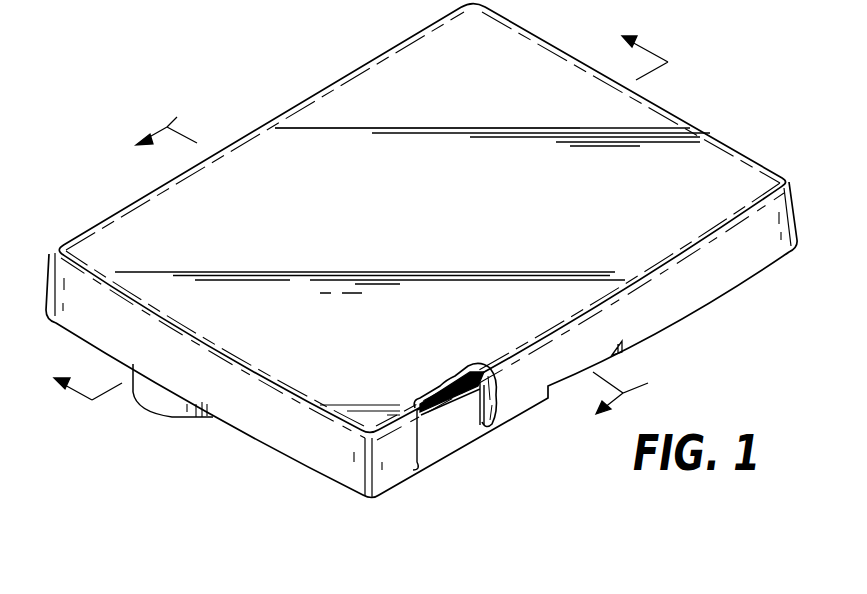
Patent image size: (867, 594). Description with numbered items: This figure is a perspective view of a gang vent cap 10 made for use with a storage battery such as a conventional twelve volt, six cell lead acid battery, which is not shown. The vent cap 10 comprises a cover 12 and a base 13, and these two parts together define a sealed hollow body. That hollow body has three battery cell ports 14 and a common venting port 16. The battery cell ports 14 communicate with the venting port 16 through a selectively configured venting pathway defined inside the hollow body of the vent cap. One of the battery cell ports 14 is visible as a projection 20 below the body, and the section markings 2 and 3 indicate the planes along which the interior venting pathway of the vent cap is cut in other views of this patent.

The gang vent cap 10 is at (339, 60).
The cover 12 is at (452, 238).
The base 13 is at (465, 427).
The battery cell ports 14 is at (209, 424).
The common venting port 16 is at (600, 356).
The cylindrical boss 20 is at (157, 400).
The section line 2- 2 is at (371, 231).
The section line 3- 3 is at (379, 280).